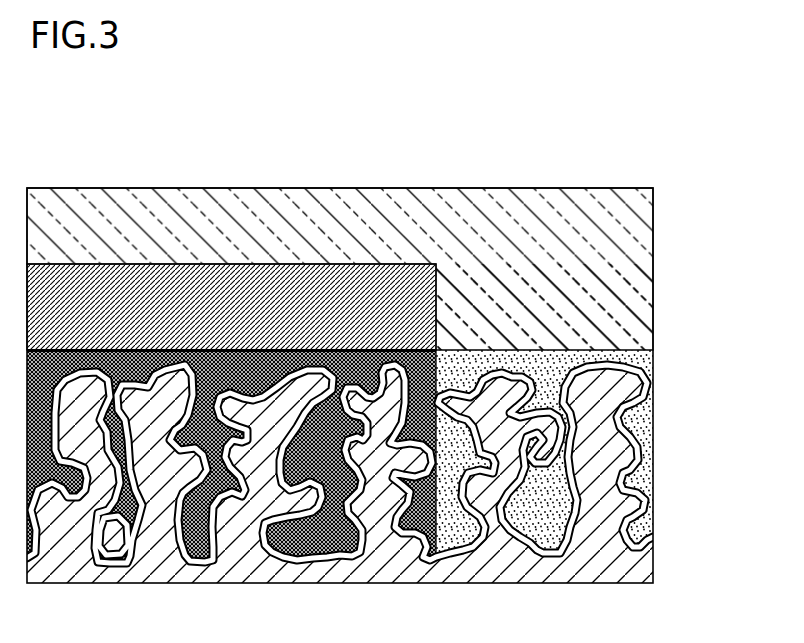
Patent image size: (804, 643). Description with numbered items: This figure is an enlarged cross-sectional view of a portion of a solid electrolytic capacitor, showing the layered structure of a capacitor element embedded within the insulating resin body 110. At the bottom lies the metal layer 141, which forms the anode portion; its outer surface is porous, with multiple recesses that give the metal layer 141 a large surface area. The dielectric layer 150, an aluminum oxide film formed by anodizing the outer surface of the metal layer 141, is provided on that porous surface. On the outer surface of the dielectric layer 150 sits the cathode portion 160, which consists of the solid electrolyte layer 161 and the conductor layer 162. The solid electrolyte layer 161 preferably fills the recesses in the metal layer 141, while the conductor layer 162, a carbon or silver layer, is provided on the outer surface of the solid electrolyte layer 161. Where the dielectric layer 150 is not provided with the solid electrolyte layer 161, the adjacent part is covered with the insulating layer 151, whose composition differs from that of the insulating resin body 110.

The insulating resin body 110 is at (643, 254).
The metal layer 141 is at (643, 571).
The dielectric layer 150 is at (180, 362).
The insulating layer 151 is at (645, 448).
The cathode portion 160 is at (231, 219).
The solid electrolyte layer 161 is at (342, 358).
The conductor layer 162 is at (243, 304).